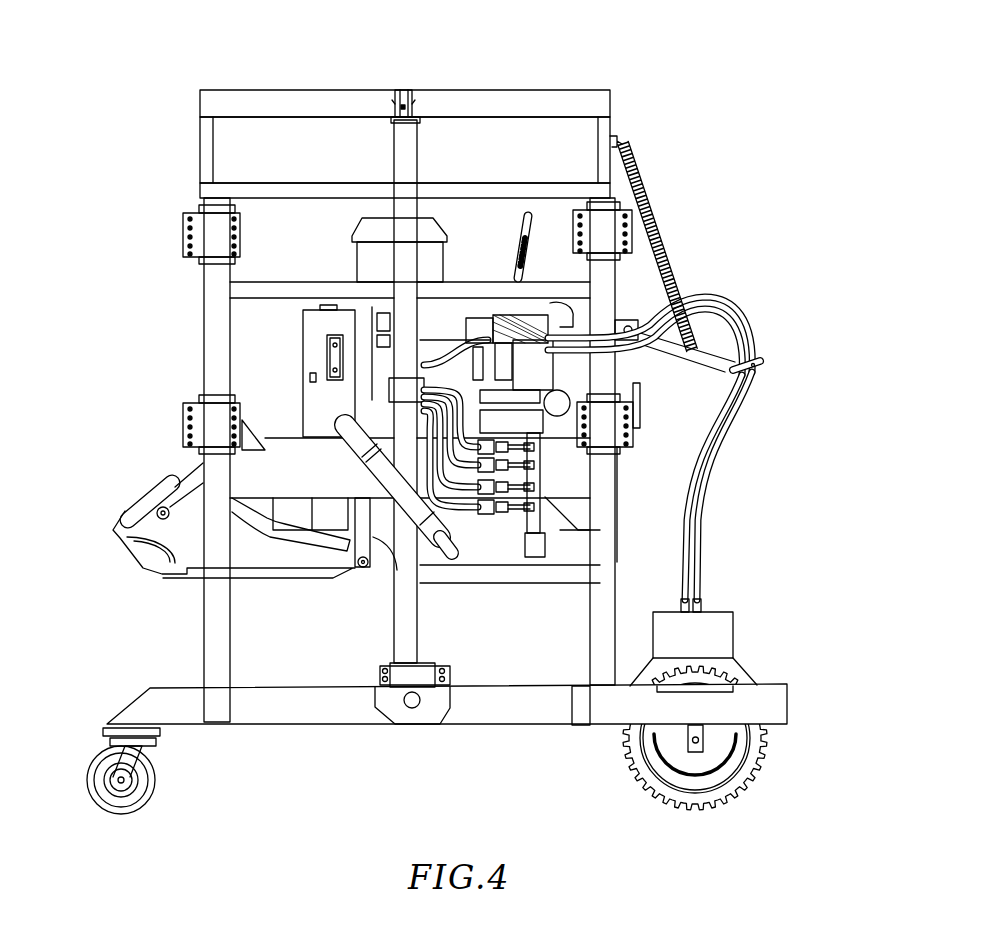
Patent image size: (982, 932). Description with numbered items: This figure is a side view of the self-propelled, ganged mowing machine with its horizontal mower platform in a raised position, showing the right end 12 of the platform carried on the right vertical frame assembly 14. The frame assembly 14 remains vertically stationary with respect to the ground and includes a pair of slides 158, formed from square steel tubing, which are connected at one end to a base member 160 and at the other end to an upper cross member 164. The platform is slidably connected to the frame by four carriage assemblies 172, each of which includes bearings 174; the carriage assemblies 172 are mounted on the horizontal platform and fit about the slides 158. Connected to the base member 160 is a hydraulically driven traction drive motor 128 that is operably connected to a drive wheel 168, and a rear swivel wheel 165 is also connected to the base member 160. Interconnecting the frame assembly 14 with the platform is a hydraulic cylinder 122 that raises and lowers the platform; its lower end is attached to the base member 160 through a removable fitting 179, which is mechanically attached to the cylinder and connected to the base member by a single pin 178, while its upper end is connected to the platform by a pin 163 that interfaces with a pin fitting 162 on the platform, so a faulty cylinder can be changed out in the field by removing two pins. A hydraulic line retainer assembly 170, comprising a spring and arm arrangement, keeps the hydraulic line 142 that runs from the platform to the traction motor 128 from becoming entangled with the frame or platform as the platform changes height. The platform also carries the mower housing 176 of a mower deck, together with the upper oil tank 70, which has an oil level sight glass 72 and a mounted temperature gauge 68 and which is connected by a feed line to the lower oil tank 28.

The right end 12 is at (320, 90).
The right vertical frame assembly 14 is at (183, 282).
The lower oil tank 28 is at (512, 552).
The temperature gauge 68 is at (311, 379).
The upper oil tank 70 is at (315, 410).
The sight glass 72 is at (327, 352).
The hydraulic cylinder 122 is at (417, 151).
The traction drive motor 128 is at (733, 630).
The hydraulic line 142 is at (703, 548).
The slides 158 is at (203, 335).
The base member 160 is at (295, 730).
The pin fitting 162 is at (395, 98).
The pin 163 is at (418, 113).
The upper cross member 164 is at (322, 183).
The rear swivel wheel 165 is at (147, 802).
The drive wheel 168 is at (760, 765).
The hydraulic line retainer assembly 170 is at (760, 373).
The carriage assemblies 172 is at (183, 225).
The bearings 174 is at (232, 262).
The mower housing 176 is at (137, 500).
The pin 178 is at (420, 703).
The removable fitting 179 is at (455, 675).